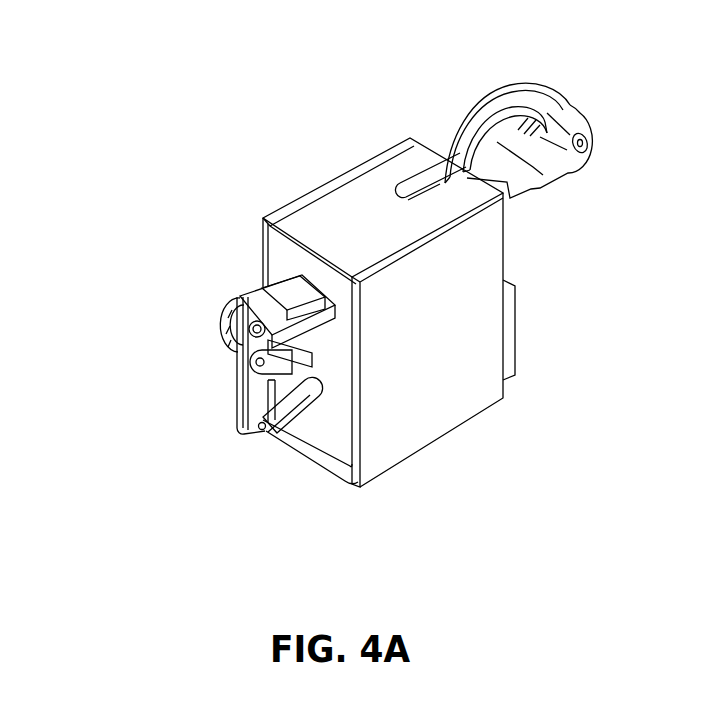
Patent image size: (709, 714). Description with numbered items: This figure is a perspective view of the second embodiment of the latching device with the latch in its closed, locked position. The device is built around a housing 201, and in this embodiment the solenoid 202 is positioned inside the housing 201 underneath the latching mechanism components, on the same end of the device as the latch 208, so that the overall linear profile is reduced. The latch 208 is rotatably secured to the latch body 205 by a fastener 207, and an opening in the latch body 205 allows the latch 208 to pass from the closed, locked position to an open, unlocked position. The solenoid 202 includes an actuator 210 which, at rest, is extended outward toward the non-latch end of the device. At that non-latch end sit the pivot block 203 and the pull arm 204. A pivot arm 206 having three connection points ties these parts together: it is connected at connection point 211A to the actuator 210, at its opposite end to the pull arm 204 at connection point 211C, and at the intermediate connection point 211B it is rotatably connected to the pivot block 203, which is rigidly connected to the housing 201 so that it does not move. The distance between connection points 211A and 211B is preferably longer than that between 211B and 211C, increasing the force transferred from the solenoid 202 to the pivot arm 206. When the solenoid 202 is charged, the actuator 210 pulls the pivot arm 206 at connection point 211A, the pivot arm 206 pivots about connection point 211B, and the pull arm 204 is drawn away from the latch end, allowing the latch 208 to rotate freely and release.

The housing 201 is at (390, 382).
The solenoid 202 is at (345, 425).
The pivot block 203 is at (313, 317).
The pull arm 204 is at (268, 312).
The latch body 205 is at (372, 185).
The pivot arm 206 is at (253, 403).
The fastener 207 is at (584, 146).
The latch 208 is at (473, 110).
The actuator 210 is at (297, 410).
The connection point 211A is at (256, 437).
The connection point 211B is at (258, 362).
The connection point 211C is at (257, 328).